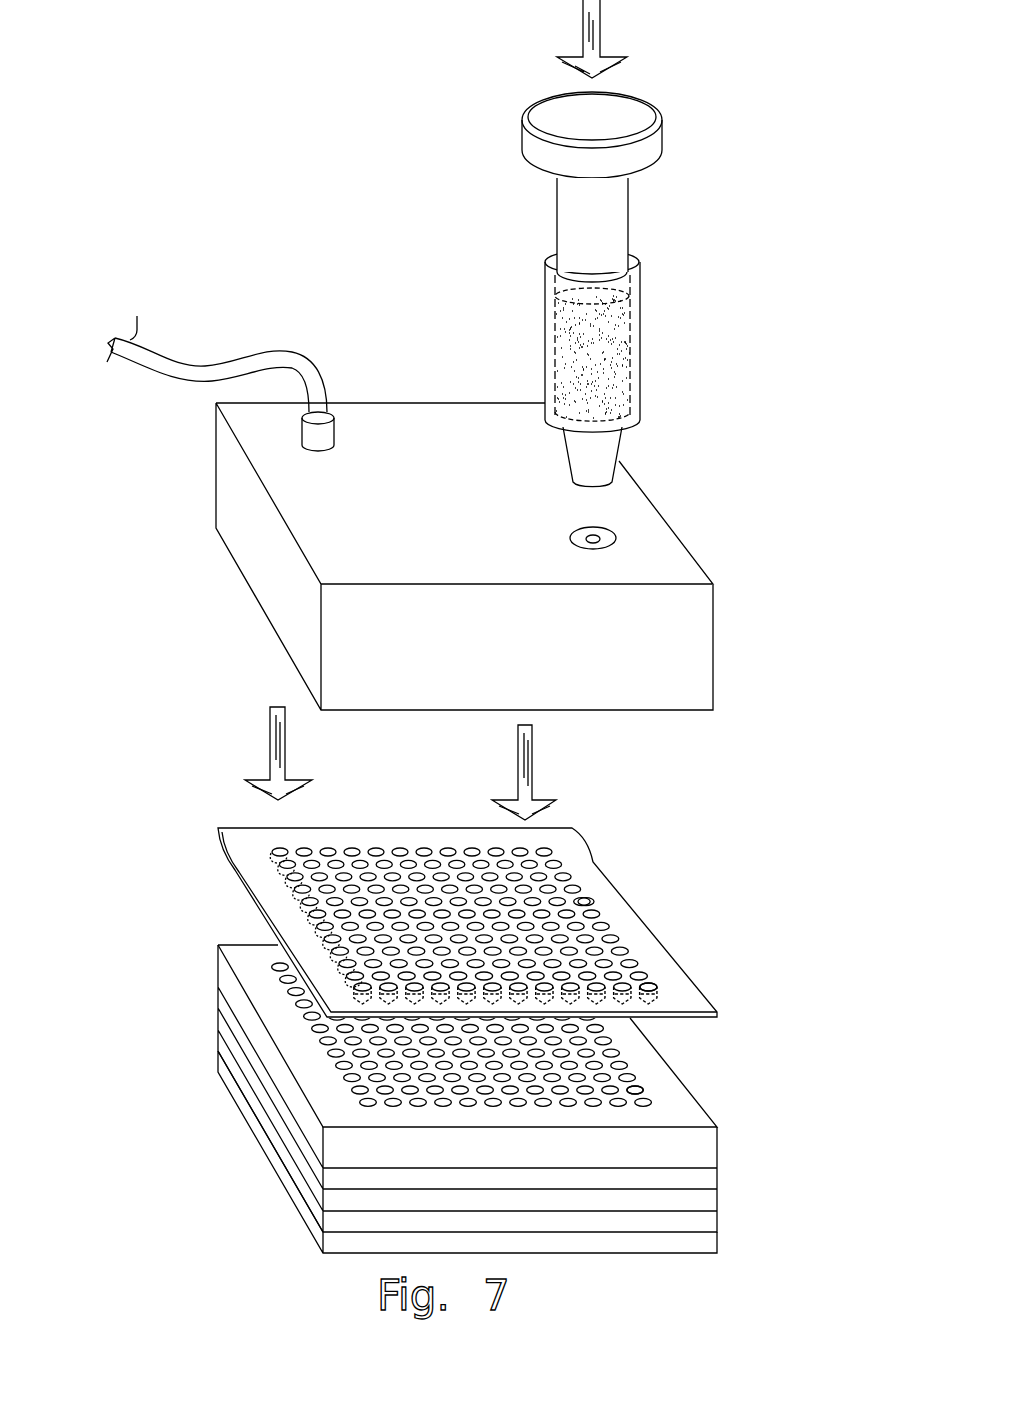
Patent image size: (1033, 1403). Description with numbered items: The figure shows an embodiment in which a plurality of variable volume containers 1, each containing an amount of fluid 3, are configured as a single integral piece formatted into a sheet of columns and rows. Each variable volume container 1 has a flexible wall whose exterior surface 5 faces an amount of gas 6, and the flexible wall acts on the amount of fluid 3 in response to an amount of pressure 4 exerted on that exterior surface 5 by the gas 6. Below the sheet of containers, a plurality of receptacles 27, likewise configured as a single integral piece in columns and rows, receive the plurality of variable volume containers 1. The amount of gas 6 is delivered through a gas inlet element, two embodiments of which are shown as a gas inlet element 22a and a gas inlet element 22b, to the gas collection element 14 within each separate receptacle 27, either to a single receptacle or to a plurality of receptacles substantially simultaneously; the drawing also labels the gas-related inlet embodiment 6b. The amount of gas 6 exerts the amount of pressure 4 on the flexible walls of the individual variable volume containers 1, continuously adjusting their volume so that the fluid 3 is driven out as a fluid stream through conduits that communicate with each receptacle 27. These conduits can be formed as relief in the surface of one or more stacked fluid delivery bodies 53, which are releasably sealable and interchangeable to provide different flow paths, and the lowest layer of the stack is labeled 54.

The amount of gas 6 is at (95, 283).
The gas inlet element (second embodiment) 6b is at (588, 347).
The gas inlet element (first embodiment) 22a is at (285, 363).
The gas inlet element (second embodiment) 22b is at (593, 537).
The amount of pressure 4 is at (395, 763).
The exterior surface 5 is at (245, 847).
The variable volume container 1 is at (590, 900).
The amount of fluid 3 is at (648, 985).
The gas collection element 14 is at (638, 1090).
The receptacle 27 is at (643, 1089).
The fluid delivery body 53 is at (222, 973).
The base layer 54 is at (262, 1138).